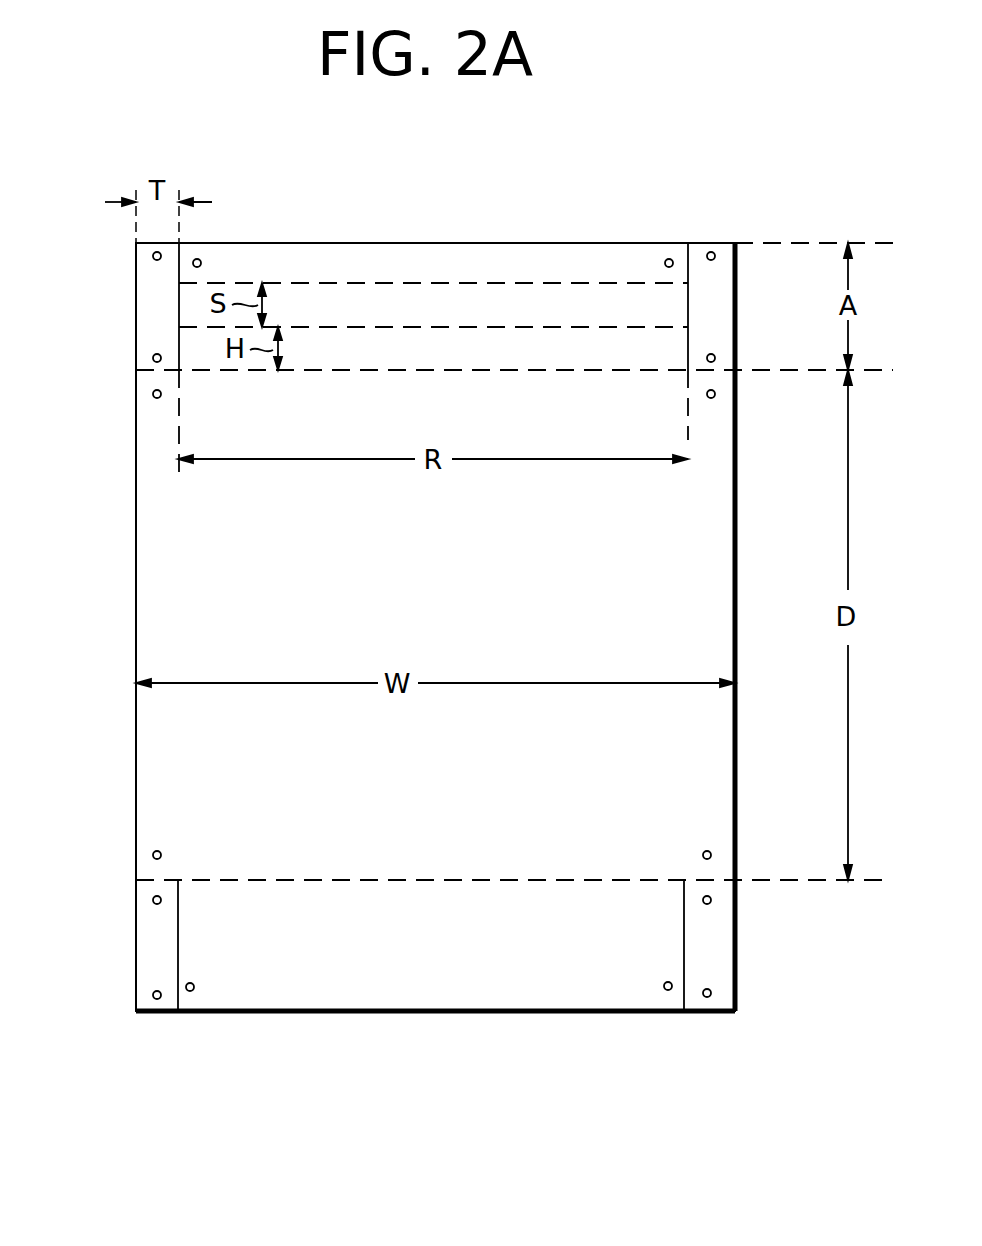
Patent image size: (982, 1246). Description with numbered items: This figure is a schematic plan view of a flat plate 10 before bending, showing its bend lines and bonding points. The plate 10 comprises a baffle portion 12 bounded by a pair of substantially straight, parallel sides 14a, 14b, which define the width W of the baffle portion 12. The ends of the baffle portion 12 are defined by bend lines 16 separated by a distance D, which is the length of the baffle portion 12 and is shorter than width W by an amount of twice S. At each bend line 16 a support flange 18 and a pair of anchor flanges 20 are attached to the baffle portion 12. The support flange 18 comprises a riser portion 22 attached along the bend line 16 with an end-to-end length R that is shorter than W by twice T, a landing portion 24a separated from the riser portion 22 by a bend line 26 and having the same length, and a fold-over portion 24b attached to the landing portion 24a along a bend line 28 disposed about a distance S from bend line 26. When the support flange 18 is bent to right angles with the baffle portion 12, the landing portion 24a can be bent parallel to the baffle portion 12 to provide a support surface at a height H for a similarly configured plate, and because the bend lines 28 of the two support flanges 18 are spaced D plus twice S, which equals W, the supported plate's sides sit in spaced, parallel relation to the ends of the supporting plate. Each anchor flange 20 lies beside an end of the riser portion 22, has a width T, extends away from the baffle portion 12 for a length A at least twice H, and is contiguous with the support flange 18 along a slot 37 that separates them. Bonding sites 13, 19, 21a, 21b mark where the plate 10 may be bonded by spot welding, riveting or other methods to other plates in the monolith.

The plate 10 is at (463, 190).
The baffle portion 12 is at (460, 597).
The bonding site 13 is at (157, 394).
The side 14a is at (136, 640).
The side 14b is at (735, 610).
The bend line 16 is at (400, 370).
The support flange 18 is at (322, 238).
The bonding site 19 is at (197, 263).
The anchor flange 20 is at (136, 305).
The bonding site 21a is at (157, 358).
The bonding site 21b is at (157, 256).
The riser portion 22 is at (490, 365).
The landing portion 24a is at (433, 307).
The fold-over portion 24b is at (412, 282).
The bend line 26 is at (592, 328).
The bend line 28 is at (510, 283).
The slot 37 is at (688, 258).